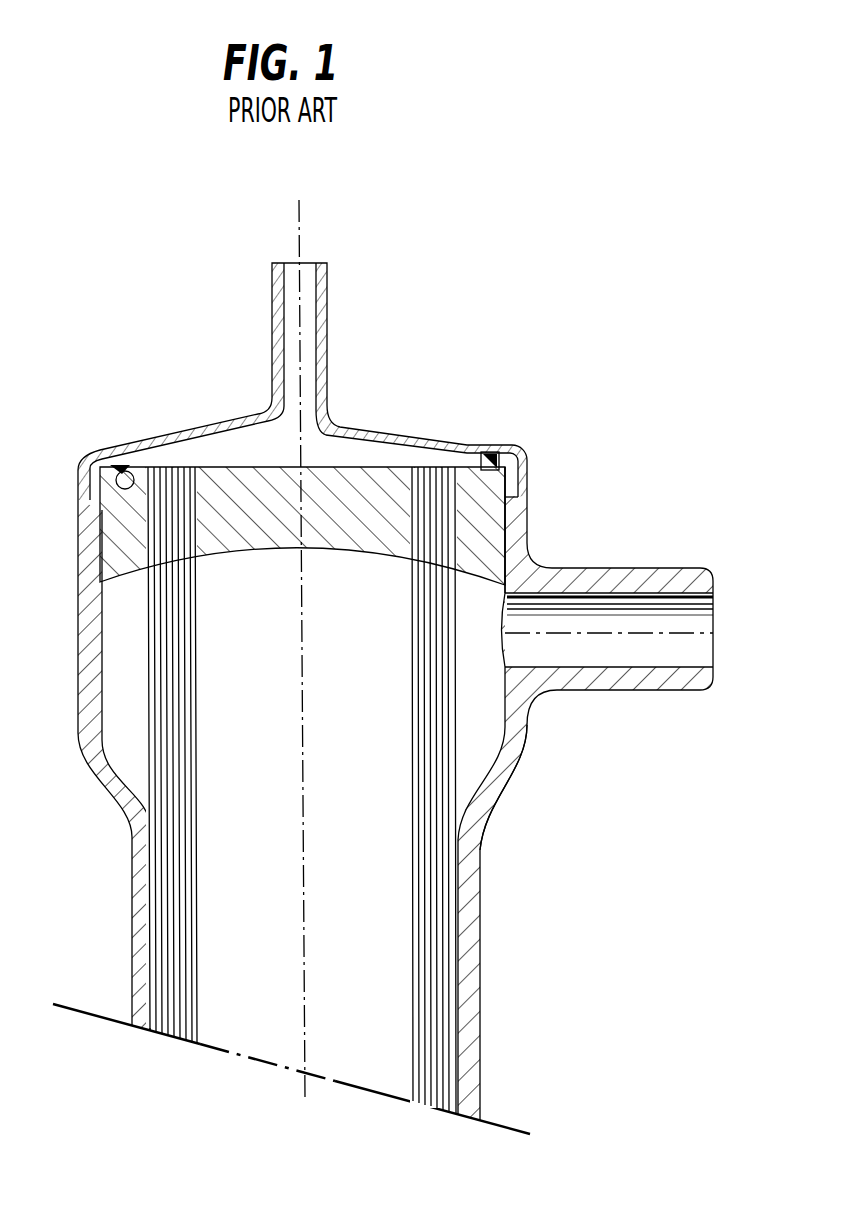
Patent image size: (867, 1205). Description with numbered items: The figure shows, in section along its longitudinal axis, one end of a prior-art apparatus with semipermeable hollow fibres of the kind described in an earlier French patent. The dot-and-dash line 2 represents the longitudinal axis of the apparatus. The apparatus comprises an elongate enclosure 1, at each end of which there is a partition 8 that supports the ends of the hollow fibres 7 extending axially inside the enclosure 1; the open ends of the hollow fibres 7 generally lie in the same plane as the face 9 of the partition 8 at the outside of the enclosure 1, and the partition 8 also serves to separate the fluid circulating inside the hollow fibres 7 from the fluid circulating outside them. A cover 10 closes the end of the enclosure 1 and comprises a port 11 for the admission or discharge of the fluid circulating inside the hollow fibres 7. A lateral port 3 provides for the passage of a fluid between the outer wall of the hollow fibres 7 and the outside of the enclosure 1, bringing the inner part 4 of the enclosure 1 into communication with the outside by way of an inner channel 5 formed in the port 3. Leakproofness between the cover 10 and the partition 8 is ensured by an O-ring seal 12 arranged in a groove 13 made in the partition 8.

The elongate enclosure 1 is at (480, 883).
The longitudinal axis 2 is at (304, 199).
The port 3 is at (650, 568).
The inner part 4 is at (490, 738).
The inner channel 5 is at (655, 650).
The hollow fibres 7 is at (455, 597).
The partition 8 is at (397, 492).
The face 9 is at (357, 478).
The cover 10 is at (327, 358).
The port 11 is at (308, 305).
The O-ring seal 12 is at (493, 453).
The groove 13 is at (122, 462).